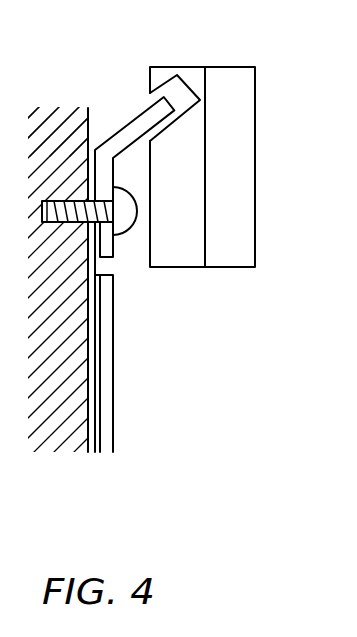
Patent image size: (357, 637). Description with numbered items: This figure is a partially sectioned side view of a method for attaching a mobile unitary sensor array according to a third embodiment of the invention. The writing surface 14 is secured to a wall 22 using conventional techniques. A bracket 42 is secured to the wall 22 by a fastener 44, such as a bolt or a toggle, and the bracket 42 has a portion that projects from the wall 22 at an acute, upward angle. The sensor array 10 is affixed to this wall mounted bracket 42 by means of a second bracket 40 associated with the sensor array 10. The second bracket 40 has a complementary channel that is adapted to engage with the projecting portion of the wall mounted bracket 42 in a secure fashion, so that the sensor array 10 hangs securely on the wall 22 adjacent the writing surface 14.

The sensor array 10 is at (245, 160).
The writing surface 14 is at (108, 413).
The wall 22 is at (65, 120).
The second bracket 40 is at (192, 92).
The bracket 42 is at (137, 117).
The fastener 44 is at (93, 218).